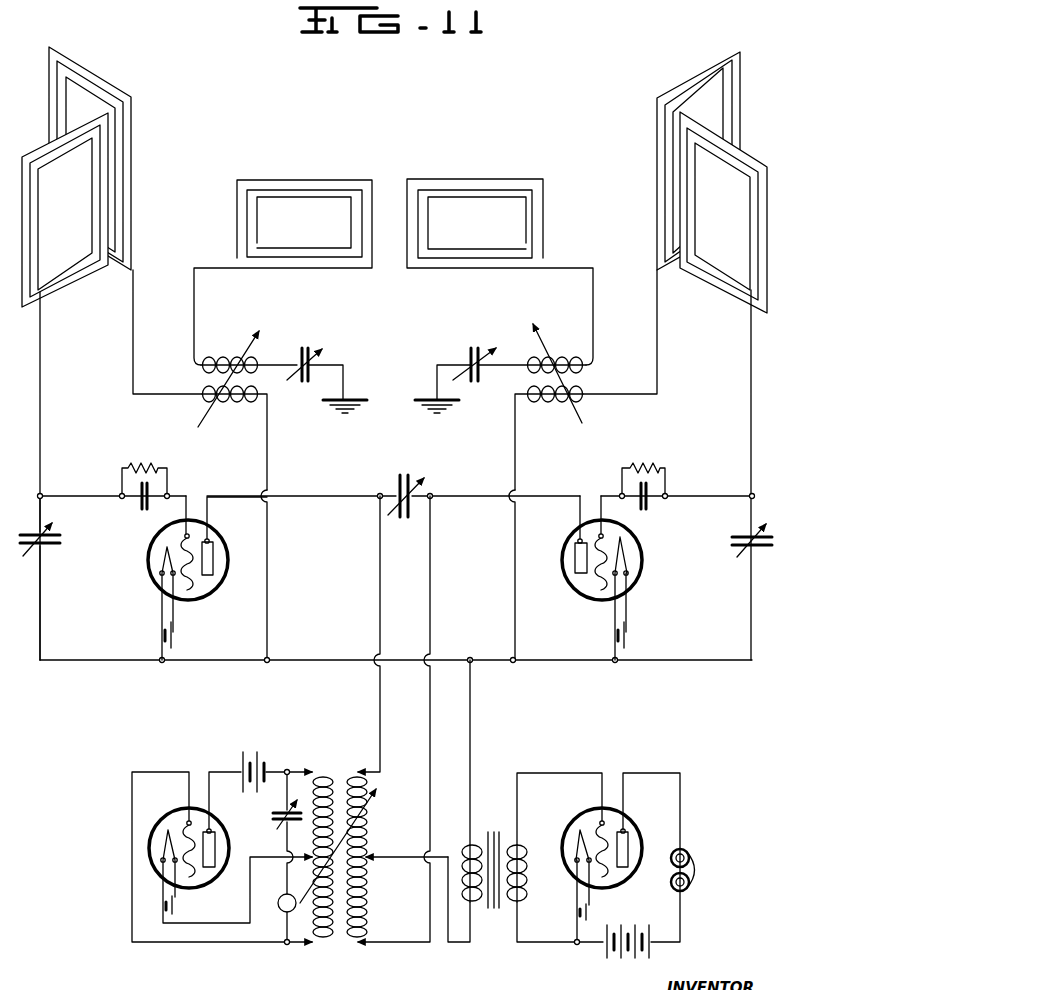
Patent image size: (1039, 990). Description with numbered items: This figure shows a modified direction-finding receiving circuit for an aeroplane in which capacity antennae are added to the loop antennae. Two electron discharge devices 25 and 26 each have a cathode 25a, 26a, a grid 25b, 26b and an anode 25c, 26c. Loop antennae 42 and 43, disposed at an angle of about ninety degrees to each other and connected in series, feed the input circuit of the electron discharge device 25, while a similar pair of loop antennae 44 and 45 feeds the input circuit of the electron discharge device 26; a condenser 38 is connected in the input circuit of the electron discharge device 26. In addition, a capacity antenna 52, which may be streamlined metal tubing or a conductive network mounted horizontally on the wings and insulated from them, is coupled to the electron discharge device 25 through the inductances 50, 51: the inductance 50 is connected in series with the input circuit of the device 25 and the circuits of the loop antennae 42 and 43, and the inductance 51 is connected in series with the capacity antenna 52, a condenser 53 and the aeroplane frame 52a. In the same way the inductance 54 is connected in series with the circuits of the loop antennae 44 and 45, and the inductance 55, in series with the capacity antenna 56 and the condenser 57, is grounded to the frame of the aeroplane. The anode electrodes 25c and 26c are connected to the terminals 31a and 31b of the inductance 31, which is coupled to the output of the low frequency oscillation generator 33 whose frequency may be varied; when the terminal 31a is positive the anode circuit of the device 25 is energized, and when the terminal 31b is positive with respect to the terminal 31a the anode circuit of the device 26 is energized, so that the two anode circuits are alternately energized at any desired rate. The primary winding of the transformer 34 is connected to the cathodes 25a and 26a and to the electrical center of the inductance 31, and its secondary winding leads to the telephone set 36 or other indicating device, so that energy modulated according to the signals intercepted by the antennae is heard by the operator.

The loop antenna 42 is at (104, 78).
The loop antenna 43 is at (67, 292).
The loop antenna 44 is at (664, 95).
The loop antenna 45 is at (707, 284).
The capacity antenna 52 is at (301, 177).
The capacity antenna 56 is at (477, 175).
The inductance 50 is at (230, 410).
The inductance 51 is at (219, 353).
The condenser 53 is at (310, 340).
The inductance 54 is at (553, 411).
The inductance 55 is at (570, 351).
The condenser 57 is at (461, 345).
The aeroplane frame 52a is at (353, 394).
The electron discharge device 25 is at (180, 578).
The cathode electrode 25a is at (163, 560).
The grid electrode 25b is at (200, 596).
The anode electrode 25c is at (209, 576).
The electron discharge device 26 is at (602, 578).
The cathode electrode 26a is at (627, 560).
The grid electrode 26b is at (600, 586).
The anode electrode 26c is at (577, 560).
The inductance 31 is at (349, 860).
The terminal of the inductance 31a is at (350, 763).
The terminal of the inductance 31b is at (360, 950).
The low frequency oscillation generator 33 is at (218, 912).
The transformer 34 is at (488, 825).
The telephone set 36 is at (693, 847).
The condenser 38 is at (641, 801).